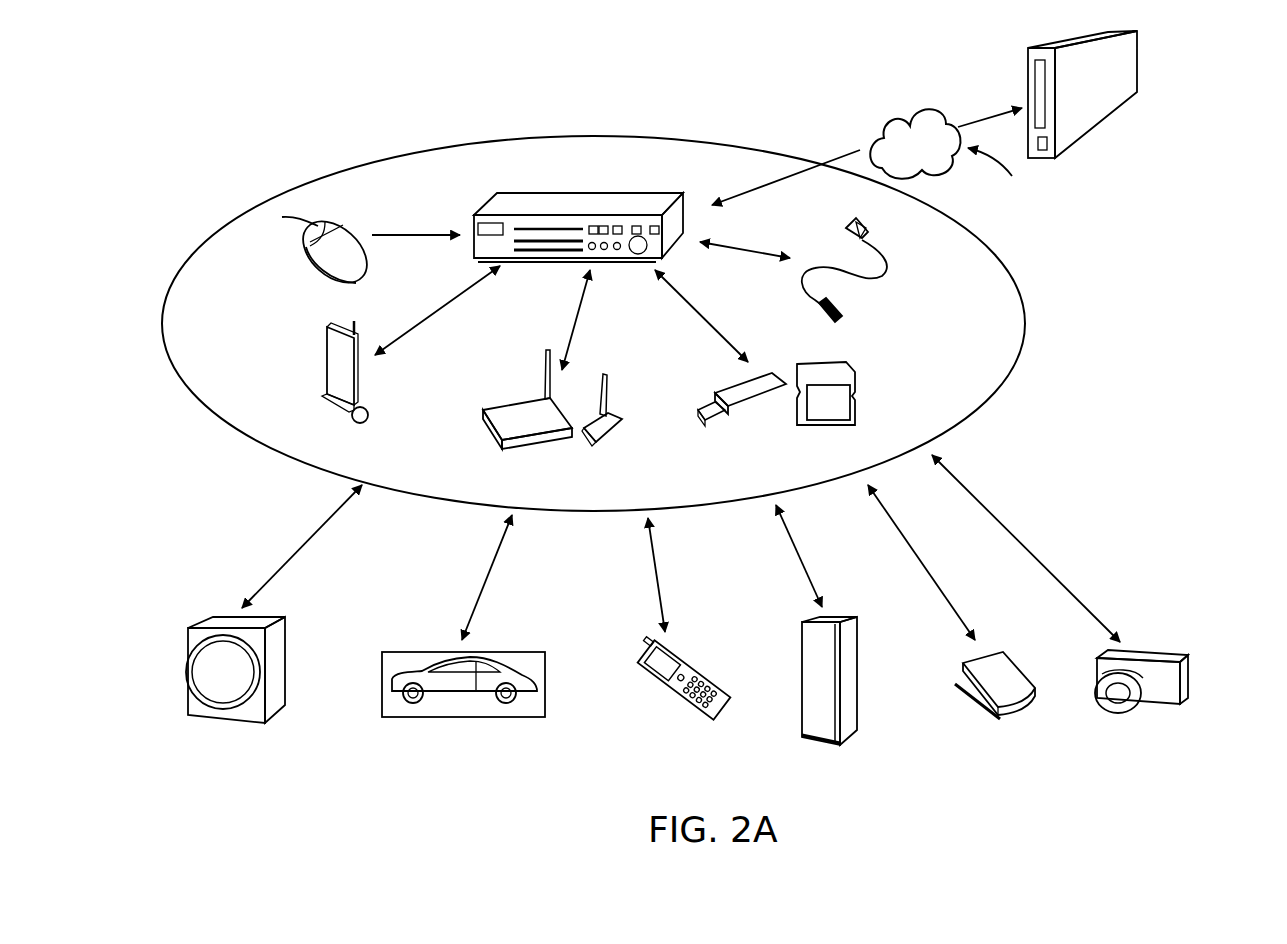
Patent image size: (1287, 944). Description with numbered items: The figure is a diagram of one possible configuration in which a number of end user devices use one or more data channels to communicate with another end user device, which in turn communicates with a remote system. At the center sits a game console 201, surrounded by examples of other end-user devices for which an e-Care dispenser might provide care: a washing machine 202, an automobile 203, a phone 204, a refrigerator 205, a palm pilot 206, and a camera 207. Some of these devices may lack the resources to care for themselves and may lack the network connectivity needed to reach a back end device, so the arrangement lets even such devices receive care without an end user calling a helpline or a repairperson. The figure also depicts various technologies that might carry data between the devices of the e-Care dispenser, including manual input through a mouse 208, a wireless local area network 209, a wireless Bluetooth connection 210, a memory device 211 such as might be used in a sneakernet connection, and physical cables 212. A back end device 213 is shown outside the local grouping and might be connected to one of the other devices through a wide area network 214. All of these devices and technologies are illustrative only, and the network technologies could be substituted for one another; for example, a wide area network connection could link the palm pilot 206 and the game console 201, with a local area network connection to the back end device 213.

The game console 201 is at (578, 214).
The washing machine 202 is at (267, 604).
The automobile 203 is at (463, 616).
The phone 204 is at (671, 622).
The refrigerator 205 is at (832, 625).
The palm pilot 206 is at (955, 602).
The camera 207 is at (1068, 584).
The mouse 208 is at (333, 251).
The wireless local area network 209 is at (364, 346).
The wireless Bluetooth connection 210 is at (552, 377).
The memory device 211 is at (781, 377).
The physical cables 212 is at (842, 277).
The back end device 213 is at (1111, 100).
The wide area network 214 is at (911, 159).